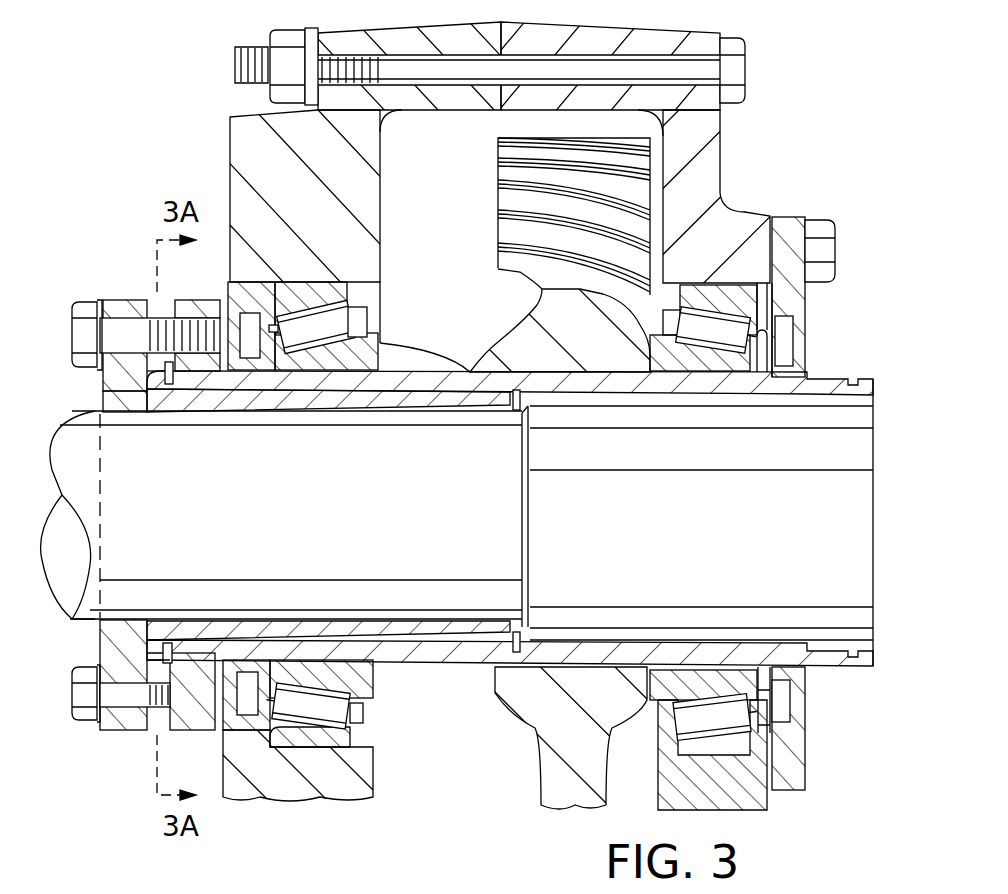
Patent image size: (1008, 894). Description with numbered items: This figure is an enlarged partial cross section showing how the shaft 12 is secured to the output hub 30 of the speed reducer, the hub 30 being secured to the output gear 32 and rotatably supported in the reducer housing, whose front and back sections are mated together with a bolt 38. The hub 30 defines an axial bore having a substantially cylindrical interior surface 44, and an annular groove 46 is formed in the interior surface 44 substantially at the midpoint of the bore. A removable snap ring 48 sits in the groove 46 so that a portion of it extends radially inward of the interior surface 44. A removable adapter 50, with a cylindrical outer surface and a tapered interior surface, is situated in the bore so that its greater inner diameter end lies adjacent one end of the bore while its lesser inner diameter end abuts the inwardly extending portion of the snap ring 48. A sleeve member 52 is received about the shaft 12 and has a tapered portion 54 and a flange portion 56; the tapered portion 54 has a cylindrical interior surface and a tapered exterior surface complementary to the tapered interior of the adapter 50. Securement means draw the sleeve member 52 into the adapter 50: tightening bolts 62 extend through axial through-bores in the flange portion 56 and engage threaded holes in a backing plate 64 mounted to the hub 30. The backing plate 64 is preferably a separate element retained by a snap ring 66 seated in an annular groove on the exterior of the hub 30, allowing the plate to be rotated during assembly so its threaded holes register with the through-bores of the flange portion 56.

The shaft 12 is at (533, 506).
The output hub 30 is at (437, 366).
The output gear 32 is at (525, 178).
The bolt 38 is at (618, 73).
The interior surface 44 is at (852, 583).
The annular groove 46 is at (527, 657).
The snap ring 48 is at (495, 405).
The adapter 50 is at (466, 372).
The sleeve member 52 is at (123, 501).
The tapered portion 54 is at (412, 398).
The flange portion 56 is at (118, 302).
The tightening bolts 62 is at (85, 307).
The backing plate 64 is at (190, 735).
The snap ring 66 is at (130, 398).